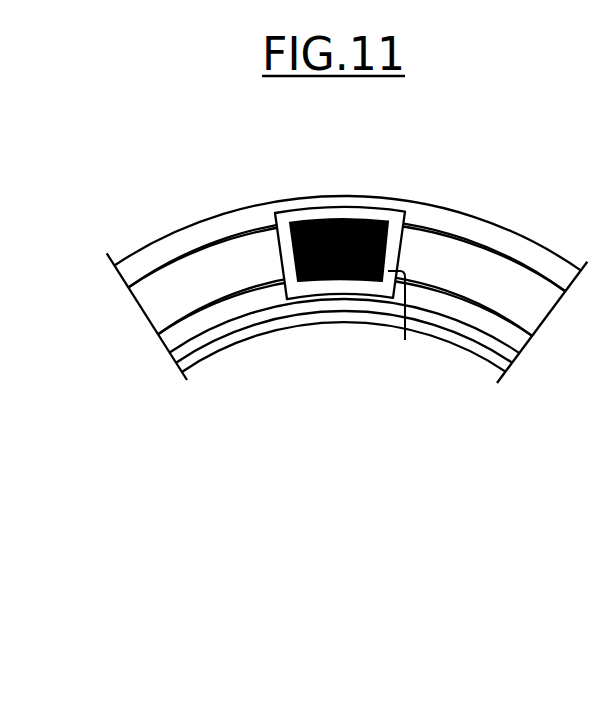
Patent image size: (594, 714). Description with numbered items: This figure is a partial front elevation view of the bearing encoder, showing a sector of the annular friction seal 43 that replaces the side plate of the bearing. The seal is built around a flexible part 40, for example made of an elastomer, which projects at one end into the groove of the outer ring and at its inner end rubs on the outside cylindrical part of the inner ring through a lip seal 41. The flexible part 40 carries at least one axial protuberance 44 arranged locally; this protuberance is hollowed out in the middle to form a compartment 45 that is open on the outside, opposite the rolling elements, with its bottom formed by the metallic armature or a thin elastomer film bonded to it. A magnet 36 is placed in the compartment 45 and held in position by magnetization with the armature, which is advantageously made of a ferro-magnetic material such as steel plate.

The magnet 36 is at (328, 220).
The flexible part 40 is at (226, 221).
The lip seal 41 is at (273, 325).
The annular friction seal 43 is at (185, 221).
The axial protuberance 44 is at (303, 217).
The compartment 45 is at (405, 340).